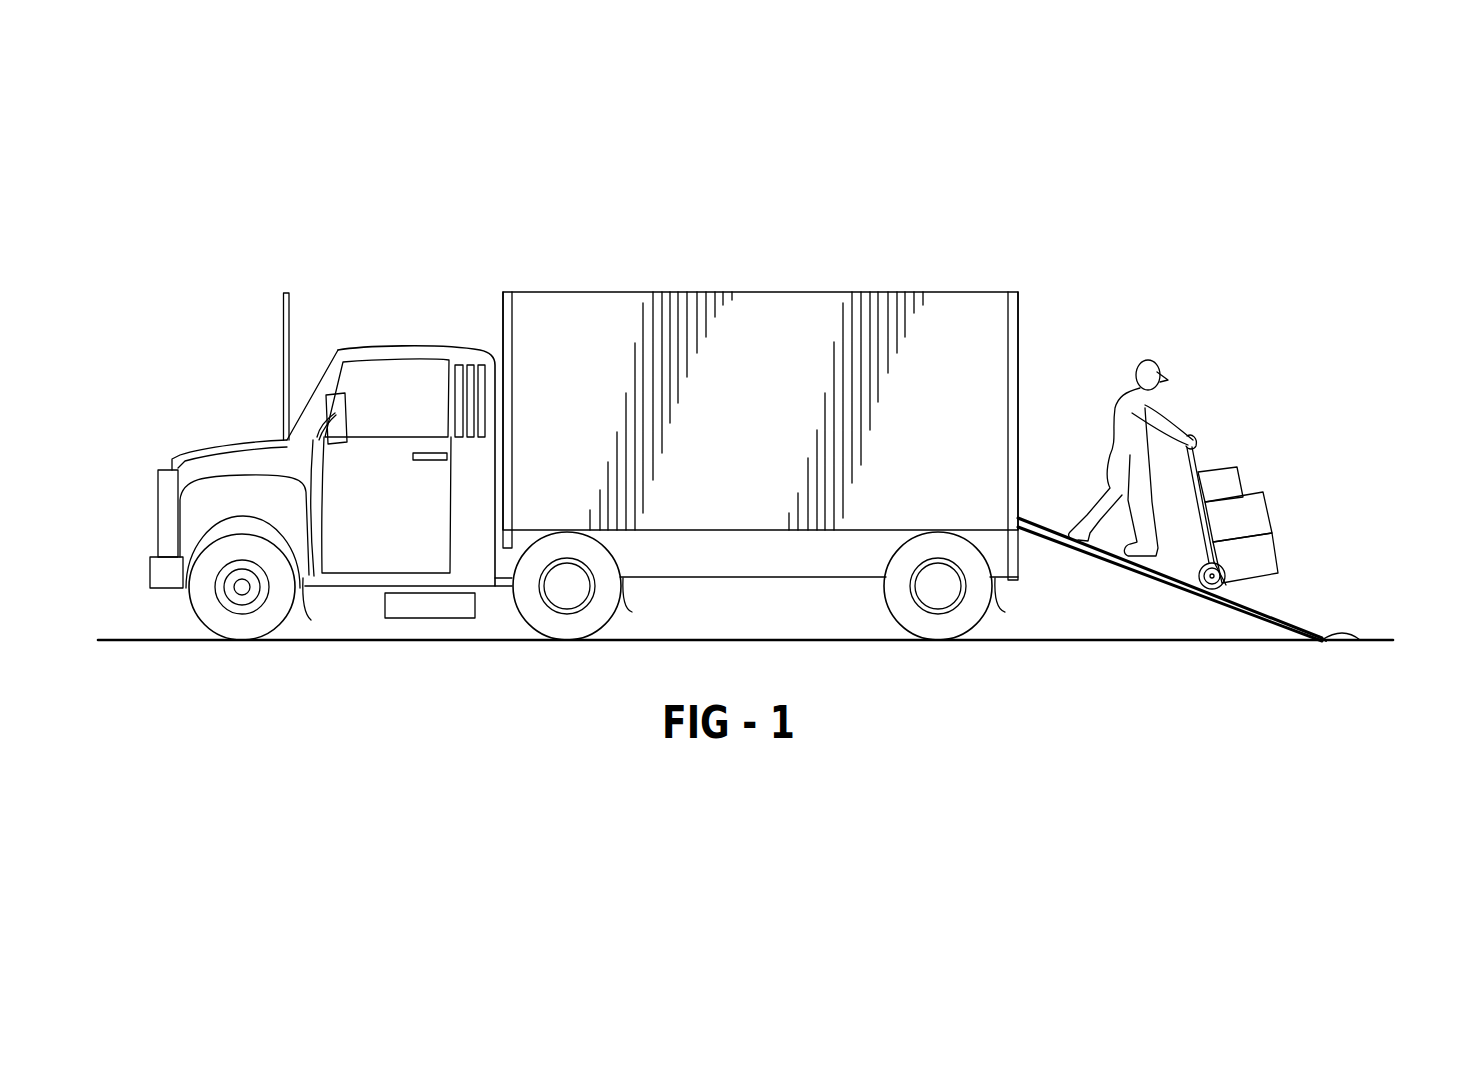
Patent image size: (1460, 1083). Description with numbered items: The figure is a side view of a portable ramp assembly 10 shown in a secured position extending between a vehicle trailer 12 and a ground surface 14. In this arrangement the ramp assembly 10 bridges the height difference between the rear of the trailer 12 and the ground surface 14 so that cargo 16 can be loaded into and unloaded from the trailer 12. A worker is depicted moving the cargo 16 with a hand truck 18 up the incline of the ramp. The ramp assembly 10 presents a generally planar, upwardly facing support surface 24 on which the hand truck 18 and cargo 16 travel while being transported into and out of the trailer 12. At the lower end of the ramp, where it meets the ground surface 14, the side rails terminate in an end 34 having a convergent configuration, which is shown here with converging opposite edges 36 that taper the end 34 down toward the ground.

The portable ramp assembly 10 is at (1206, 613).
The vehicle trailer 12 is at (822, 292).
The ground surface 14 is at (1380, 640).
The cargo 16 is at (1267, 458).
The hand truck 18 is at (1207, 460).
The support surface 24 is at (1286, 614).
The end of side rails 34 is at (1358, 640).
The converging opposite edges 36 is at (1327, 637).